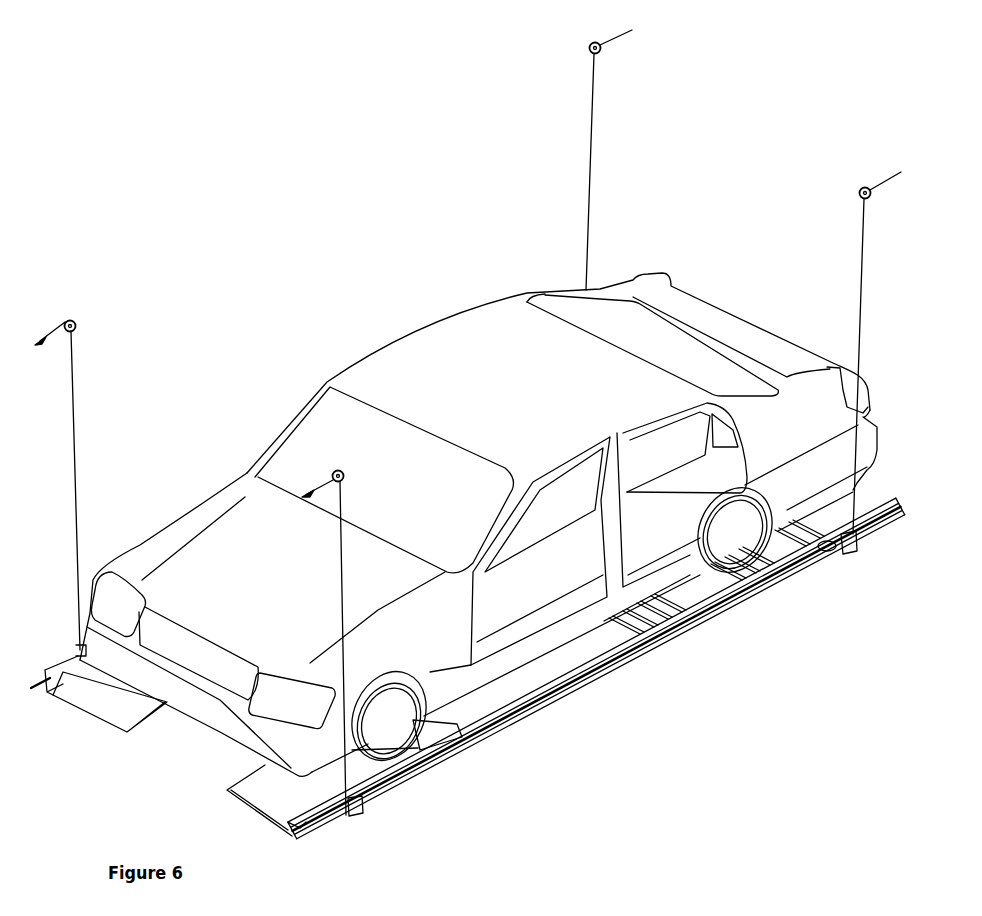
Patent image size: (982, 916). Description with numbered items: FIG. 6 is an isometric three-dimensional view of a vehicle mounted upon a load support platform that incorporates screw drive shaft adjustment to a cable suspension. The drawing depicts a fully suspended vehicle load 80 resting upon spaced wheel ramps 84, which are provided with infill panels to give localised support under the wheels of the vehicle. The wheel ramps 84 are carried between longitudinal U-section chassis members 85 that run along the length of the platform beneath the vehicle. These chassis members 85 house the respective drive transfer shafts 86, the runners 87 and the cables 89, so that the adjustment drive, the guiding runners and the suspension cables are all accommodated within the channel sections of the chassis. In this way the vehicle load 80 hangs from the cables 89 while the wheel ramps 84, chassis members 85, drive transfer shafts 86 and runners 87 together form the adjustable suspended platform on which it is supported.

The vehicle load 80 is at (637, 541).
The wheel ramps 84 is at (437, 729).
The longitudinal 'U'-section chassis members 85 is at (553, 695).
The drive transfer shafts 86 is at (605, 680).
The runners 87 is at (723, 610).
The cables 89 is at (858, 253).